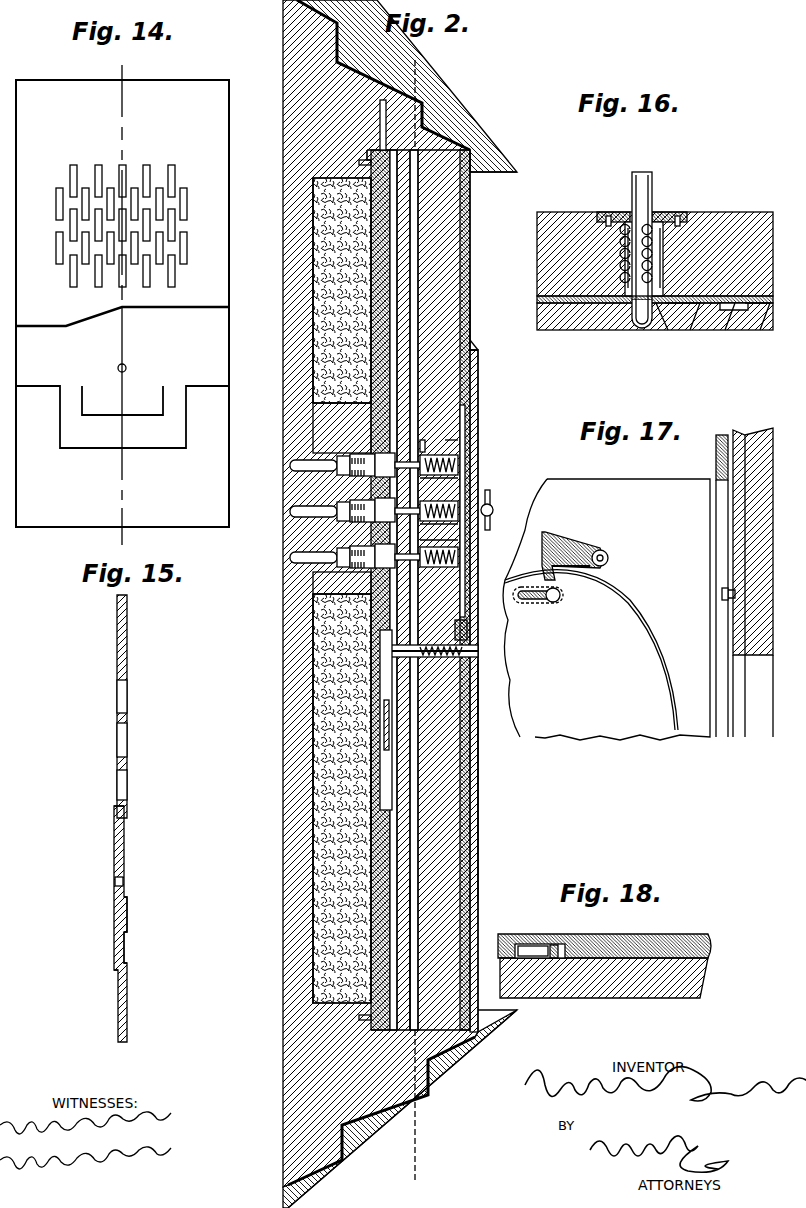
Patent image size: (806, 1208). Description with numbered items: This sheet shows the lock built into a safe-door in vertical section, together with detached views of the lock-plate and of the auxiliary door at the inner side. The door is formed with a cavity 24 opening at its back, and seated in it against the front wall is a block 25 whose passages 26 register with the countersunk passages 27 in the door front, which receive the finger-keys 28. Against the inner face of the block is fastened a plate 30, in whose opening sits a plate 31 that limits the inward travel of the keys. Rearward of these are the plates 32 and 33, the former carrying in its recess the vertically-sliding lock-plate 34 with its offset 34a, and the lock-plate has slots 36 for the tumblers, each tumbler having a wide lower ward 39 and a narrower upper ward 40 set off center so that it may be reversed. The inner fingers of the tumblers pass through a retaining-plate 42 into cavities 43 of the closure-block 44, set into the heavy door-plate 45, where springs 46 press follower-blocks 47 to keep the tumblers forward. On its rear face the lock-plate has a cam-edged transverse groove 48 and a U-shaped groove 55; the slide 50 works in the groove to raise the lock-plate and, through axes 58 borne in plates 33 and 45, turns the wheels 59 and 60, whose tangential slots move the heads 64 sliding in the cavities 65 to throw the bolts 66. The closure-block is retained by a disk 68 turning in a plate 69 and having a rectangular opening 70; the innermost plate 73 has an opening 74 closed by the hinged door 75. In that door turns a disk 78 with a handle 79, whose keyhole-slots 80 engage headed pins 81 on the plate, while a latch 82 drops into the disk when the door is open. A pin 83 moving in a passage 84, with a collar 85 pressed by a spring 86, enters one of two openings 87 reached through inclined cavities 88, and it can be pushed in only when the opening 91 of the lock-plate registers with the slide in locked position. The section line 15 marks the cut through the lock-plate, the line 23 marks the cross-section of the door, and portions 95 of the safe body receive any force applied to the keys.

In FIG. 14, the section line 15 is at (134, 303).
In FIG. 2, the section line 23 is at (367, 619).
In FIG. 2, the cavity 24 is at (320, 368).
In FIG. 2, the block 25 is at (318, 586).
In FIG. 2, the passages 26 is at (337, 553).
In FIG. 2, the passages 27 is at (290, 512).
In FIG. 2, the finger-keys 28 is at (290, 466).
In FIG. 2, the plate 30 is at (313, 935).
In FIG. 2, the plate 31 is at (320, 592).
In FIG. 2, the plate 32 is at (380, 862).
In FIG. 2, the plate 33 is at (462, 211).
In FIG. 2, the lock-plate 34 is at (380, 408).
In FIG. 14, the lock-plate 34 is at (222, 292).
In FIG. 15, the lock-plate 34 is at (130, 668).
In FIG. 2, the offset 34a is at (380, 758).
In FIG. 15, the offset 34a is at (114, 812).
In FIG. 14, the slots 36 is at (185, 205).
In FIG. 15, the slots 36 is at (128, 745).
In FIG. 2, the ward 39 is at (397, 512).
In FIG. 2, the ward 40 is at (365, 442).
In FIG. 2, the retaining-plate 42 is at (470, 482).
In FIG. 2, the cavities 43 is at (490, 495).
In FIG. 2, the closure-block 44 is at (455, 527).
In FIG. 2, the door-plate 45 is at (450, 860).
In FIG. 16, the door-plate 45 is at (745, 215).
In FIG. 2, the springs 46 is at (452, 470).
In FIG. 2, the follower-blocks 47 is at (447, 432).
In FIG. 14, the groove 48 is at (144, 390).
In FIG. 15, the groove 48 is at (127, 868).
In FIG. 2, the slide 50 is at (378, 672).
In FIG. 14, the groove 55 is at (123, 437).
In FIG. 15, the groove 55 is at (152, 944).
In FIG. 2, the axes 58 is at (480, 364).
In FIG. 2, the wheel 59 is at (420, 910).
In FIG. 2, the wheel 60 is at (450, 312).
In FIG. 2, the heads 64 is at (320, 208).
In FIG. 2, the cavities 65 is at (367, 150).
In FIG. 2, the bolts 66 is at (383, 108).
In FIG. 2, the disk 68 is at (480, 400).
In FIG. 17, the disk 68 is at (733, 648).
In FIG. 2, the plate 69 is at (480, 832).
In FIG. 16, the plate 69 is at (533, 305).
In FIG. 18, the plate 69 is at (712, 958).
In FIG. 2, the opening 70 is at (465, 452).
In FIG. 2, the innermost plate 73 is at (470, 268).
In FIG. 2, the opening 74 is at (468, 312).
In FIG. 2, the door 75 is at (480, 708).
In FIG. 17, the door 75 is at (595, 619).
In FIG. 2, the disk 78 is at (468, 598).
In FIG. 16, the disk 78 is at (608, 330).
In FIG. 17, the disk 78 is at (606, 609).
In FIG. 18, the disk 78 is at (680, 934).
In FIG. 2, the handle 79 is at (500, 510).
In FIG. 17, the keyhole-slots 80 is at (558, 592).
In FIG. 18, the keyhole-slots 80 is at (530, 946).
In FIG. 17, the headed pins 81 is at (722, 598).
In FIG. 18, the headed pins 81 is at (556, 960).
In FIG. 17, the latch 82 is at (582, 556).
In FIG. 2, the pin 83 is at (480, 653).
In FIG. 16, the pin 83 is at (655, 195).
In FIG. 17, the pin 83 is at (726, 568).
In FIG. 2, the passage 84 is at (470, 636).
In FIG. 16, the passage 84 is at (690, 222).
In FIG. 16, the collar 85 is at (640, 330).
In FIG. 16, the spring 86 is at (662, 224).
In FIG. 16, the openings 87 is at (660, 312).
In FIG. 16, the cavities 88 is at (672, 320).
In FIG. 14, the opening 91 is at (126, 366).
In FIG. 15, the opening 91 is at (124, 882).
In FIG. 2, the portions of the body of the safe 95 is at (495, 146).